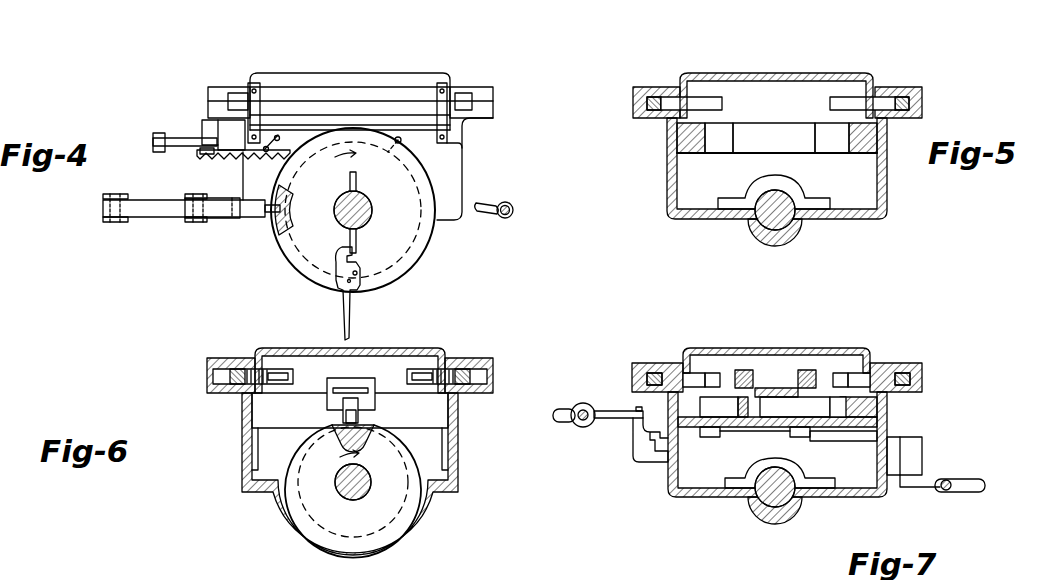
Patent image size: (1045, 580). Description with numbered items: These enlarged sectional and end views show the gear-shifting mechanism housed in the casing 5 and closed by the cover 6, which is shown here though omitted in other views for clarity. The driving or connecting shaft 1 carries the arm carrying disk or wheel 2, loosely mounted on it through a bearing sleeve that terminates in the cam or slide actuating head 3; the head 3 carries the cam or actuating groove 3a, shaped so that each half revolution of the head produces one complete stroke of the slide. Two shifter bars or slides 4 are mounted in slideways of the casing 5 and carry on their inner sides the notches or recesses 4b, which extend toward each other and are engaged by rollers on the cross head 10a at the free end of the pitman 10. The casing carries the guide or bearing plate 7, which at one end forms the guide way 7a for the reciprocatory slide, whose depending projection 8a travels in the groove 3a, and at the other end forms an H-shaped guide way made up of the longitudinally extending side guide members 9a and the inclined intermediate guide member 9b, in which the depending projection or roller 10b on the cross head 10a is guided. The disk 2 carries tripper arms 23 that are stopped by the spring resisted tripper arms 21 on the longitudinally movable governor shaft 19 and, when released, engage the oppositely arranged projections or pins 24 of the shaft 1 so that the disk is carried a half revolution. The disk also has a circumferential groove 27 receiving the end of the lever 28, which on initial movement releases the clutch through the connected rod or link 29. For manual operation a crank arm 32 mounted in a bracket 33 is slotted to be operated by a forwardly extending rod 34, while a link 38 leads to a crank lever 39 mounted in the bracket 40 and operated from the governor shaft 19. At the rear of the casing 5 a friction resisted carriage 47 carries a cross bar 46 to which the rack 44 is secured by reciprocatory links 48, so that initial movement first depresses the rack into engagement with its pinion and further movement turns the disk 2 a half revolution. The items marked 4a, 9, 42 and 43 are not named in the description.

In FIG. 4, the driving or connecting shaft 1 is at (338, 203).
In FIG. 5, the driving or connecting shaft 1 is at (760, 198).
In FIG. 6, the driving or connecting shaft 1 is at (371, 483).
In FIG. 7, the driving or connecting shaft 1 is at (752, 473).
In FIG. 4, the arm carrying disk or wheel 2 is at (404, 266).
In FIG. 6, the cam or slide actuating head 3 is at (405, 470).
In FIG. 6, the cam or actuating groove 3a is at (372, 430).
In FIG. 4, the shifter bars or slides 4 is at (228, 102).
In FIG. 5, the shifter bars or slides 4 is at (722, 104).
In FIG. 6, the shifter bars or slides 4 is at (243, 370).
In FIG. 7, the shifter bars or slides 4 is at (676, 374).
In FIG. 4, the flange 4a is at (473, 104).
In FIG. 5, the flange 4a is at (948, 98).
In FIG. 6, the flange 4a is at (494, 377).
In FIG. 7, the flange 4a is at (948, 374).
In FIG. 7, the notches or recesses 4b is at (845, 342).
In FIG. 4, the casing 5 is at (455, 170).
In FIG. 5, the casing 5 is at (887, 184).
In FIG. 6, the casing 5 is at (458, 448).
In FIG. 7, the casing 5 is at (887, 422).
In FIG. 4, the cover 6 is at (350, 86).
In FIG. 5, the cover 6 is at (742, 72).
In FIG. 6, the cover 6 is at (292, 350).
In FIG. 7, the cover 6 is at (742, 350).
In FIG. 5, the guide or bearing plate 7 is at (693, 156).
In FIG. 6, the guide or bearing plate 7 is at (280, 425).
In FIG. 6, the guide way 7a is at (365, 388).
In FIG. 6, the depending projection 8a is at (352, 388).
In FIG. 7, the plate 9 is at (752, 427).
In FIG. 7, the longitudinally extending side guide members 9a is at (878, 404).
In FIG. 7, the inclined intermediate guide member 9b is at (802, 438).
In FIG. 7, the pitman 10 is at (768, 372).
In FIG. 7, the cross head 10a is at (788, 388).
In FIG. 7, the depending projection or roller 10b is at (738, 404).
In FIG. 4, the governor shaft 19 is at (515, 210).
In FIG. 7, the governor shaft 19 is at (950, 480).
In FIG. 4, the spring resisted tripper arms 21 is at (492, 203).
In FIG. 4, the tripper arms 23 is at (342, 305).
In FIG. 4, the projections or pins 24 is at (357, 240).
In FIG. 4, the circumferential groove 27 is at (278, 226).
In FIG. 4, the lever 28 is at (160, 190).
In FIG. 4, the rod or link 29 is at (112, 223).
In FIG. 7, the crank arm 32 is at (622, 411).
In FIG. 7, the bracket 33 is at (645, 462).
In FIG. 7, the rod 34 is at (583, 410).
In FIG. 7, the link 38 is at (845, 442).
In FIG. 7, the crank lever 39 is at (935, 490).
In FIG. 7, the bracket 40 is at (922, 445).
In FIG. 4, the slide bar 42 is at (180, 147).
In FIG. 4, the bracket 43 is at (210, 133).
In FIG. 4, the rack 44 is at (222, 153).
In FIG. 4, the cross bar 46 is at (455, 138).
In FIG. 4, the friction resisted carriage 47 is at (256, 113).
In FIG. 4, the reciprocatory links 48 is at (278, 137).